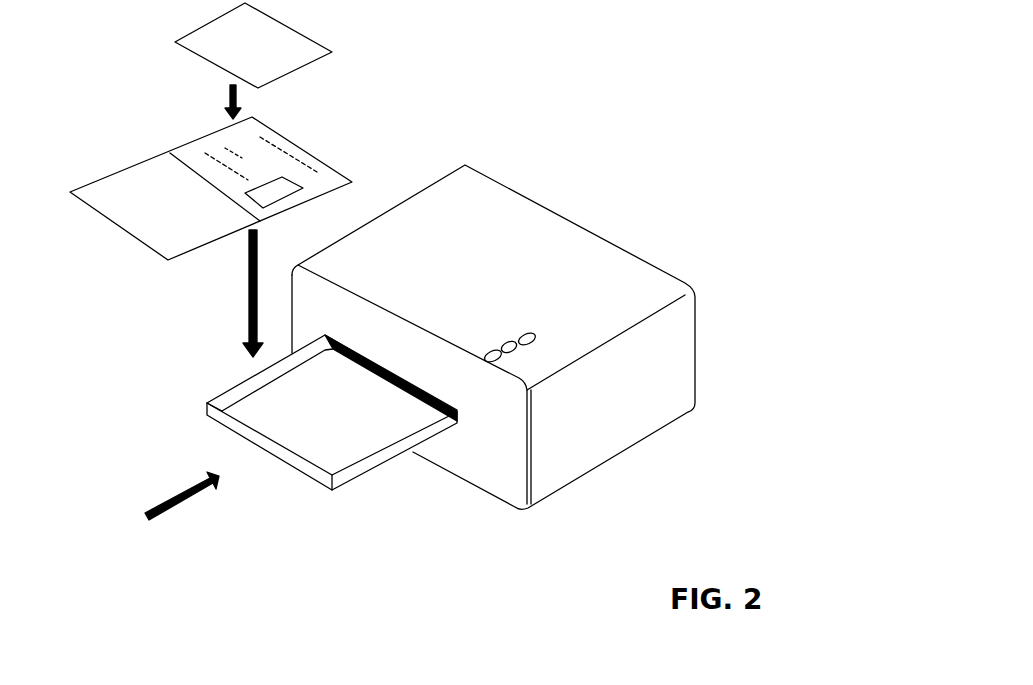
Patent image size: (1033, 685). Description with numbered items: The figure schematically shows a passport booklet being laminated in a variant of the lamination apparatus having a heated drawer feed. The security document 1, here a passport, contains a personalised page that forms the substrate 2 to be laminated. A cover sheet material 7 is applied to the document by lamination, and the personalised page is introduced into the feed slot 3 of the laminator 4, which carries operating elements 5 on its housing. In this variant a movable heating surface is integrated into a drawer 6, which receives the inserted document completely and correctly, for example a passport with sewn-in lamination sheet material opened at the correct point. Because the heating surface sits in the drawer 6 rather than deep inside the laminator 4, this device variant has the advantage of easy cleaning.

The security document 1 is at (130, 187).
The substrate 2 is at (318, 173).
The feed slot 3 is at (450, 420).
The laminator 4 is at (557, 475).
The operating elements 5 is at (515, 355).
The drawer 6 is at (277, 427).
The cover sheet material 7 is at (212, 43).